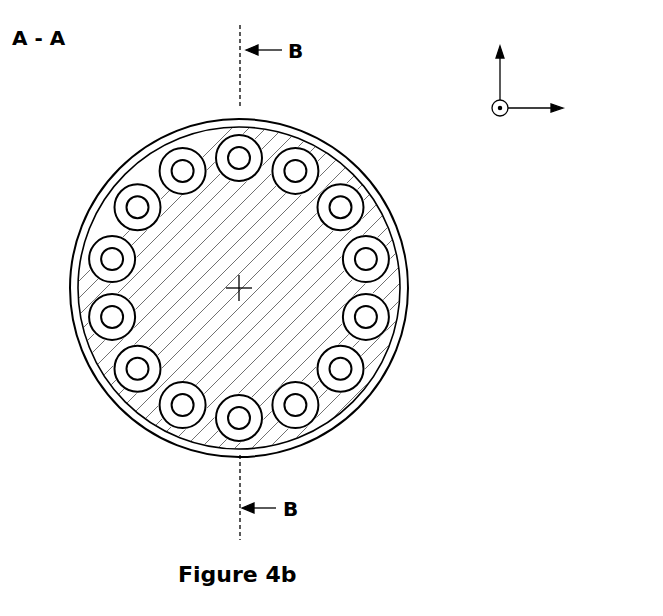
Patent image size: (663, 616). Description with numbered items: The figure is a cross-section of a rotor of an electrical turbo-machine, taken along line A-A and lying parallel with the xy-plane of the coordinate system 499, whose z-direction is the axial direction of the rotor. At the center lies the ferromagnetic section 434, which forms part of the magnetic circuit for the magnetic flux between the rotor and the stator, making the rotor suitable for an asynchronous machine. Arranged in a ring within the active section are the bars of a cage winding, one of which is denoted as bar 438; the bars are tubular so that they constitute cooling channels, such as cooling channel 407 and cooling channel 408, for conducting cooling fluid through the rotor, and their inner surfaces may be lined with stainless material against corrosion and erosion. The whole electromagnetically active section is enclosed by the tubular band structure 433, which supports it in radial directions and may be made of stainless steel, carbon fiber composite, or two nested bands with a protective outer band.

The tubular band structure 433 is at (128, 161).
The ferromagnetic section 434 is at (192, 281).
The bar of the cage winding 438 is at (236, 135).
The cooling channel 407 is at (239, 165).
The cooling channel 408 is at (240, 395).
The coordinate system 499 is at (557, 83).